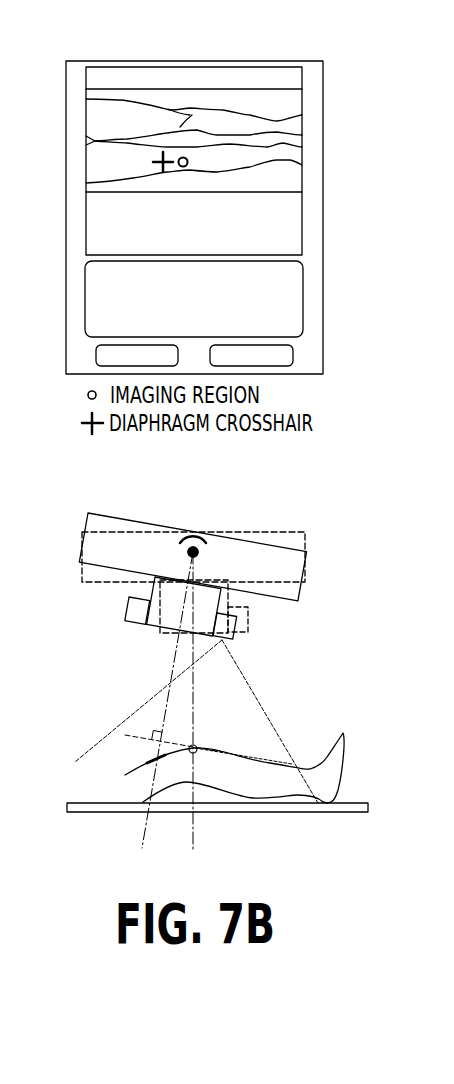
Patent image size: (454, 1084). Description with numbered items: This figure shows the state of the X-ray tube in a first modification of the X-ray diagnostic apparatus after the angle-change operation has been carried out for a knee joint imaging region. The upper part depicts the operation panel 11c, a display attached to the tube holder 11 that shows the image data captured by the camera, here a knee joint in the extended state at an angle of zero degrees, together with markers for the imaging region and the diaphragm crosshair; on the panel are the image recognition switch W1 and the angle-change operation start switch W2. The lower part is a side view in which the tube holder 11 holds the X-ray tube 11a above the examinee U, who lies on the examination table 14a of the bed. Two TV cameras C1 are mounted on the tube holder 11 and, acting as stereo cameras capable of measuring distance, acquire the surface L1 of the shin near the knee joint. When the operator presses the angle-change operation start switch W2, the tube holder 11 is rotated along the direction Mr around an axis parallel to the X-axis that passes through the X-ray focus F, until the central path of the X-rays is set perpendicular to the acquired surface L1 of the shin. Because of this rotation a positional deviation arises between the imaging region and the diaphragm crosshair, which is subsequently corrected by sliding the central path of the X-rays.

The operation panel 11c is at (323, 89).
The image recognition switch W1 is at (96, 355).
The angle-change operation start switch W2 is at (293, 353).
The tube holder 11 is at (249, 557).
The X-ray tube 11a is at (307, 555).
The TV camera C1 is at (127, 617).
The direction of rotation Mr is at (195, 533).
The X-ray focus F is at (191, 552).
The surface of the shin L1 is at (217, 743).
The subject U is at (345, 733).
The examination table 14a is at (307, 813).